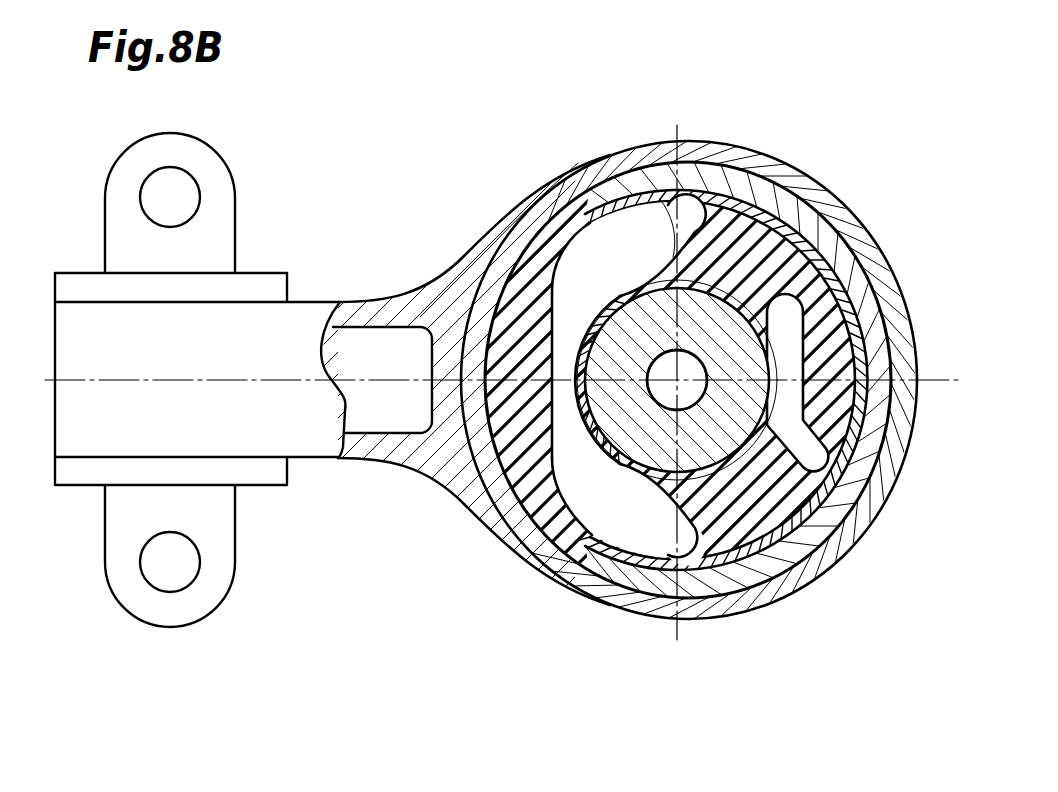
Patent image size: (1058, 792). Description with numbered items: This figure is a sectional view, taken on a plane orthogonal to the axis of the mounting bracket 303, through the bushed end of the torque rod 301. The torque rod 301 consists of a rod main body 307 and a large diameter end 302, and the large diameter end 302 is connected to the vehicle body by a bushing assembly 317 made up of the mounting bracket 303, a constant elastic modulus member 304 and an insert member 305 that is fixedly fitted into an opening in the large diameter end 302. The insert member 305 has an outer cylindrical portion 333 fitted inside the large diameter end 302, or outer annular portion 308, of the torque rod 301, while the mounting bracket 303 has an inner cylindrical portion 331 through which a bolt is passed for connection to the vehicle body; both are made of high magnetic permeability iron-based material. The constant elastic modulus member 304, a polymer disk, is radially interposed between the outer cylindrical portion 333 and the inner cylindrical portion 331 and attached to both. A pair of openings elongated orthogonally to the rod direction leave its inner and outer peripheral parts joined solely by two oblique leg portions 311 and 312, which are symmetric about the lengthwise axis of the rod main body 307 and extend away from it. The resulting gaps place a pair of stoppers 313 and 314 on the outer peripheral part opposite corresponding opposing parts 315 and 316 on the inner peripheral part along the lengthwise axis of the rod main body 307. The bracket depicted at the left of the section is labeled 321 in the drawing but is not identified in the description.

The torque rod 301 is at (354, 152).
The large diameter end 302 is at (496, 521).
The mounting bracket 303 is at (716, 292).
The constant elastic modulus member 304 is at (800, 229).
The insert member 305 is at (866, 256).
The rod main body 307 is at (370, 298).
The outer annular portion 308 is at (482, 238).
The leg portion 311 is at (658, 198).
The leg portion 312 is at (680, 545).
The stopper 313 is at (556, 450).
The stopper 314 is at (812, 536).
The opposing part 315 is at (590, 445).
The opposing part 316 is at (828, 452).
The bushing assembly 317 is at (524, 186).
The mounting bracket 321 is at (264, 514).
The inner cylindrical portion 331 is at (748, 292).
The outer cylindrical portion 333 is at (893, 295).